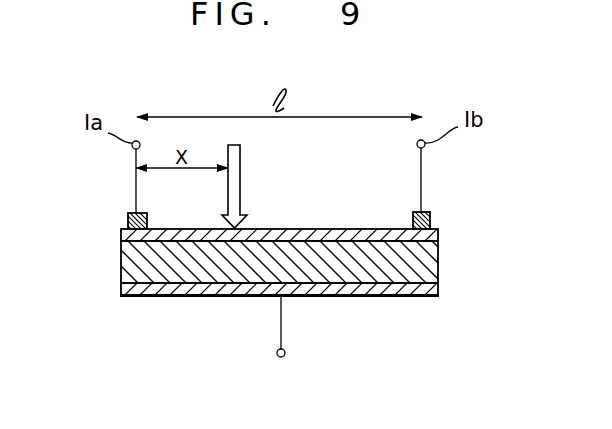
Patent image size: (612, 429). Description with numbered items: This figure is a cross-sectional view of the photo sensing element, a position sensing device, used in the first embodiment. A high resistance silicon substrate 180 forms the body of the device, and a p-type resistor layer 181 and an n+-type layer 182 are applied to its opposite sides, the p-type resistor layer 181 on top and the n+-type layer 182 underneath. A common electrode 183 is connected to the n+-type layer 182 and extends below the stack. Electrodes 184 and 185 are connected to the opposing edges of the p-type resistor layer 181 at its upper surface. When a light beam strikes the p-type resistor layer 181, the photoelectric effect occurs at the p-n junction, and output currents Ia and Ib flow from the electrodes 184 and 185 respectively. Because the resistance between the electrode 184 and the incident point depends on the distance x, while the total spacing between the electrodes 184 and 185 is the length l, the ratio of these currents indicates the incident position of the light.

The high resistance silicon substrate 180 is at (121, 268).
The p-type resistor layer 181 is at (121, 239).
The n+-type layer 182 is at (121, 292).
The common electrode 183 is at (283, 328).
The electrode 184 is at (128, 214).
The electrode 185 is at (431, 212).